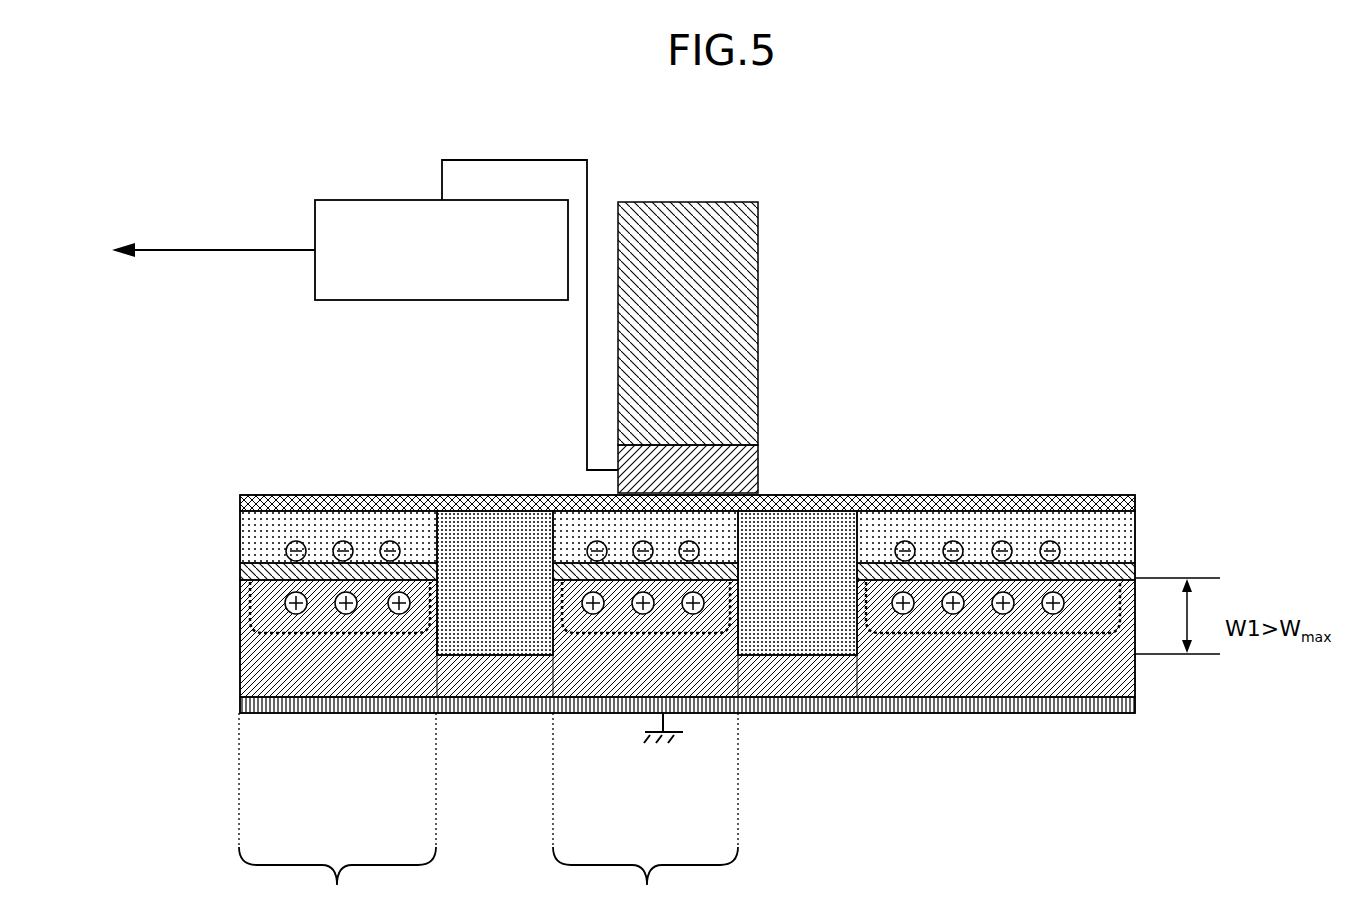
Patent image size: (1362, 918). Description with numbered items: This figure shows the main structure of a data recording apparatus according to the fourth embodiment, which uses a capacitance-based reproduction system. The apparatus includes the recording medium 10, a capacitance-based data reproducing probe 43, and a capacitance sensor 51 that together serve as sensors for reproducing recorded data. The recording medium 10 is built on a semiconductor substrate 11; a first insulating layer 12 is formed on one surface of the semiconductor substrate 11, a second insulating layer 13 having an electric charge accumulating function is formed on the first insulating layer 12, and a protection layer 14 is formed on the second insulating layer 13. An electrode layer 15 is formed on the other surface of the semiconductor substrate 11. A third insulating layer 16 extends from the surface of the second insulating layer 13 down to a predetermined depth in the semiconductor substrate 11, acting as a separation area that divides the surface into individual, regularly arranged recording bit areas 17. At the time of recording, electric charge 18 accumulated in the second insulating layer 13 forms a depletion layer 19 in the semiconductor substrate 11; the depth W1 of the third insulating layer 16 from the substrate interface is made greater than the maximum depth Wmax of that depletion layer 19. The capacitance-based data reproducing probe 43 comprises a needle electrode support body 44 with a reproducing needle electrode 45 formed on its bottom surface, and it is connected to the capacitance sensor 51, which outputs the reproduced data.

The recording medium 10 is at (212, 636).
The semiconductor substrate 11 is at (1125, 676).
The first insulating layer 12 is at (1125, 572).
The second insulating layer 13 is at (1125, 527).
The protection layer 14 is at (1008, 494).
The electrode layer 15 is at (1130, 707).
The third insulating layer 16 is at (480, 530).
The recording bit area 17 is at (488, 815).
The electric charge 18 is at (596, 541).
The depletion layer 19 is at (702, 715).
The capacitance-based data reproducing probe 43 is at (724, 297).
The needle electrode support body 44 is at (752, 228).
The reproducing needle electrode 45 is at (752, 468).
The capacitance sensor 51 is at (373, 199).